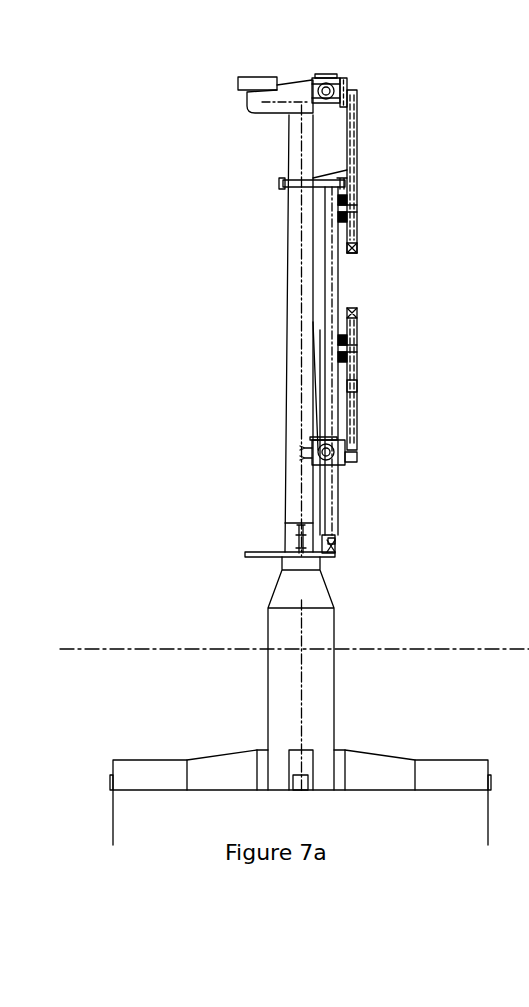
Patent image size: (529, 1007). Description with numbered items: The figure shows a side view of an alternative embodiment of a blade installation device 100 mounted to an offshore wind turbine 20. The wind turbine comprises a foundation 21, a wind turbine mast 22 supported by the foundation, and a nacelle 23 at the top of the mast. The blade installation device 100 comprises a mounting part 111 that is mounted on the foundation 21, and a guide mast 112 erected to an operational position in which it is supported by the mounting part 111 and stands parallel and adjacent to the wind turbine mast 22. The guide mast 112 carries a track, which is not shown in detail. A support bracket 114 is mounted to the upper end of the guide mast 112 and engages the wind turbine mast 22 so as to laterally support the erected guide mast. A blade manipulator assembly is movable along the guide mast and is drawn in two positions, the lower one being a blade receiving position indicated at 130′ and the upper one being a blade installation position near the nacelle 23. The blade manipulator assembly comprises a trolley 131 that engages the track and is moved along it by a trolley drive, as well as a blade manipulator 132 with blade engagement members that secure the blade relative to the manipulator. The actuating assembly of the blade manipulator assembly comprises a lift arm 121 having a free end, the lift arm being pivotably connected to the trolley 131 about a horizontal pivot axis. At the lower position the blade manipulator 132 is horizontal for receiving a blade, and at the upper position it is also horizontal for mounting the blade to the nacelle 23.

The offshore wind turbine 20 is at (216, 201).
The foundation 21 is at (275, 585).
The wind turbine mast 22 is at (285, 408).
The nacelle 23 is at (258, 104).
The blade installation device 100 is at (381, 300).
The mounting part 111 is at (333, 548).
The guide mast 112 is at (330, 482).
The support bracket 114 is at (313, 179).
The lift arm 121 is at (350, 110).
The lower blade receiving position of blade manipulator assembly 130′ is at (383, 346).
The trolley 131 is at (342, 345).
The blade manipulator 132 is at (342, 82).